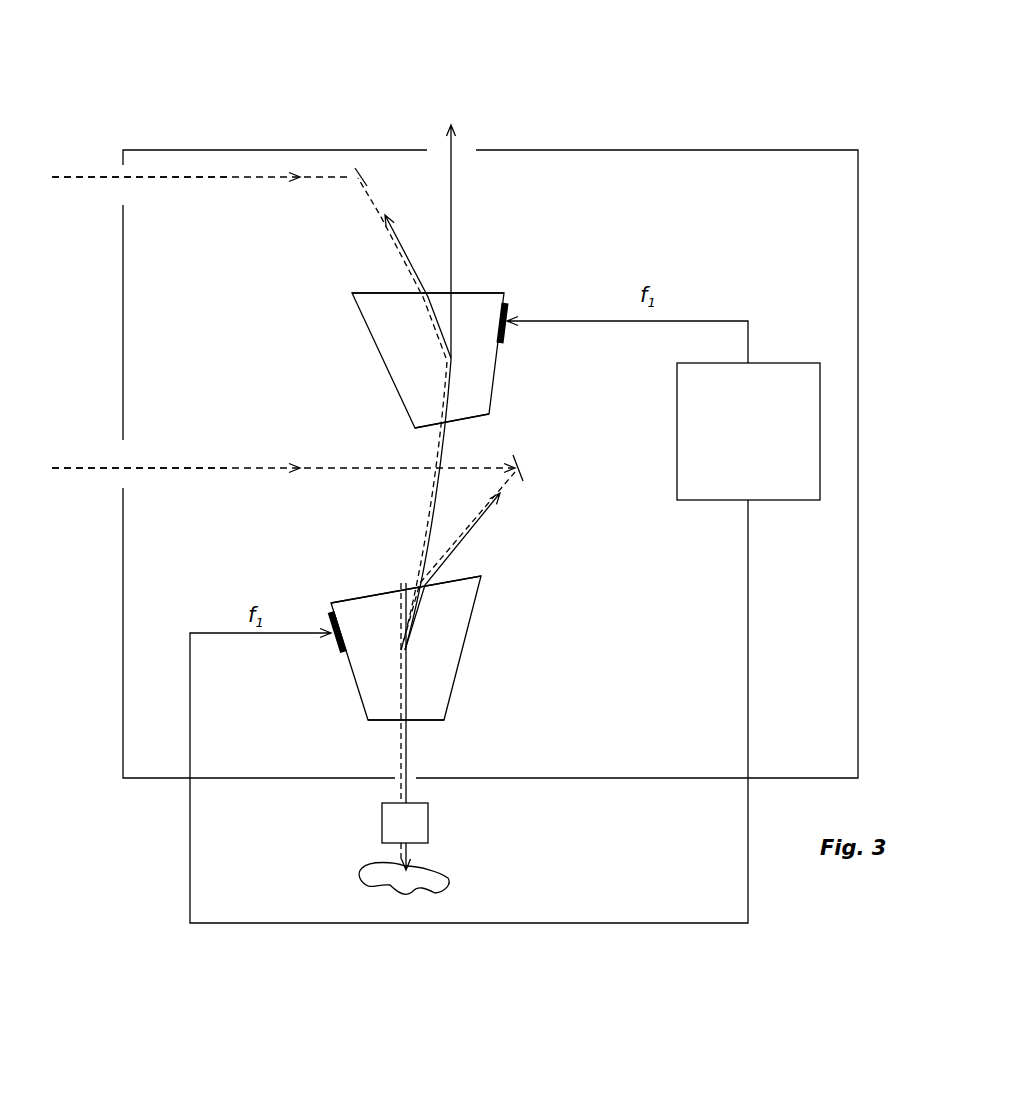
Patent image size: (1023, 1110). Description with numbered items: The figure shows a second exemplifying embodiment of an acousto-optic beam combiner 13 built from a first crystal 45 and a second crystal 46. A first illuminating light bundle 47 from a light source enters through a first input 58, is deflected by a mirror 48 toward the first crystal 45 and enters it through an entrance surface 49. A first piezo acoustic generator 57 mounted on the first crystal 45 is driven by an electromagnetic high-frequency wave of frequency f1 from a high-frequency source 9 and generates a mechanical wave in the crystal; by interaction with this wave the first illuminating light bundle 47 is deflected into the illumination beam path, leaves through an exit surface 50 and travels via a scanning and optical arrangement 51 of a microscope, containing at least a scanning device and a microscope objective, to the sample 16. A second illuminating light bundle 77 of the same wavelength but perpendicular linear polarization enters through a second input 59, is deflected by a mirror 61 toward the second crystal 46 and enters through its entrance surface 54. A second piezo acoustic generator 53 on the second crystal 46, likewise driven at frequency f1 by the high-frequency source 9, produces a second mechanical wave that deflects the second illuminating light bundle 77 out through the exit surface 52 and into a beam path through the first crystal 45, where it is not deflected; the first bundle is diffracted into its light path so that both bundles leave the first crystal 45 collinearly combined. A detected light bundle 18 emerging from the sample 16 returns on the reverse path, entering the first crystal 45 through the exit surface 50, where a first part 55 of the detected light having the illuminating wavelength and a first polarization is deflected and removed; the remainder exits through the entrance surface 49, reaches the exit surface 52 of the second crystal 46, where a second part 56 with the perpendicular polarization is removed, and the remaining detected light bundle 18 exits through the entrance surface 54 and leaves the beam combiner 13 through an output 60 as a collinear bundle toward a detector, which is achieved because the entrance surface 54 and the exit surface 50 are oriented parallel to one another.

The acousto-optic beam combiner 13 is at (925, 182).
The high-frequency source 9 is at (810, 375).
The second crystal 46 is at (390, 338).
The first crystal 45 is at (455, 638).
The second piezo acoustic generator 53 is at (505, 307).
The first piezo acoustic generator 57 is at (331, 622).
The entrance surface 54 is at (478, 293).
The exit surface 52 is at (468, 436).
The entrance surface 49 is at (365, 600).
The exit surface 50 is at (433, 722).
The output 60 is at (480, 136).
The detected light bundle 18 is at (455, 198).
The second part of the detected light 56 is at (404, 255).
The mirror 61 is at (365, 183).
The first part of the detected light 55 is at (490, 516).
The mirror 48 is at (525, 478).
The second illuminating light bundle 77 is at (242, 180).
The second input 59 is at (110, 191).
The first illuminating light bundle 47 is at (245, 468).
The first input 58 is at (110, 446).
The scanning and optical arrangement 51 is at (388, 820).
The sample 16 is at (430, 882).